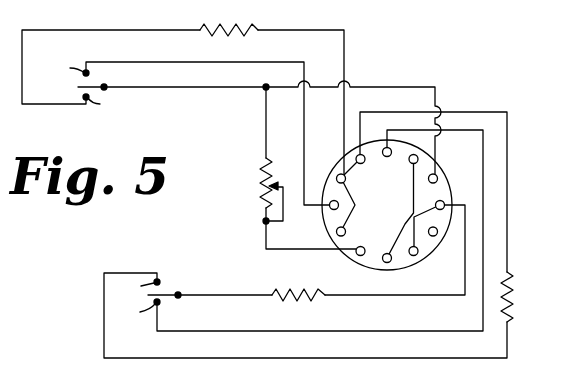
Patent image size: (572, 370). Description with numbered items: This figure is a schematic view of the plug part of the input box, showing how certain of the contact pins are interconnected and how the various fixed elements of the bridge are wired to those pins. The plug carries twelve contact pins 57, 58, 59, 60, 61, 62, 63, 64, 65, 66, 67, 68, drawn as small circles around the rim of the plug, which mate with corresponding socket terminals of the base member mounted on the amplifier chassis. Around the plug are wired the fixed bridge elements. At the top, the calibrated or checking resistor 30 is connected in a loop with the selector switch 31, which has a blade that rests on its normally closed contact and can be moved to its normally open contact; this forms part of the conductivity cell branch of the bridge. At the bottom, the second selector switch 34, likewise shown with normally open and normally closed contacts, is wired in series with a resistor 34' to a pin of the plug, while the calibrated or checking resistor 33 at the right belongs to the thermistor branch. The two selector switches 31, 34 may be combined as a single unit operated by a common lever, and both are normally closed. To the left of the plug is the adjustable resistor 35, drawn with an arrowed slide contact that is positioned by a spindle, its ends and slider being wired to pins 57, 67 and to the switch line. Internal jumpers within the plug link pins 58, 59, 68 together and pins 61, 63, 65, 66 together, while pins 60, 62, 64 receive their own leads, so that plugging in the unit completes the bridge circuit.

The calibrated or checking resistor 30 is at (209, 26).
The selector switch 31 is at (102, 86).
The calibrated or checking resistor 33 is at (513, 300).
The selector switch 34 is at (153, 291).
The resistor 34' is at (293, 306).
The adjustable resistor 35 is at (262, 180).
The contact pin 57 is at (329, 208).
The contact pin 58 is at (336, 178).
The contact pin 59 is at (364, 163).
The contact pin 60 is at (386, 141).
The contact pin 61 is at (411, 170).
The contact pin 62 is at (437, 176).
The contact pin 63 is at (444, 203).
The contact pin 64 is at (436, 236).
The contact pin 65 is at (414, 255).
The contact pin 66 is at (388, 262).
The contact pin 67 is at (358, 255).
The contact pin 68 is at (337, 233).